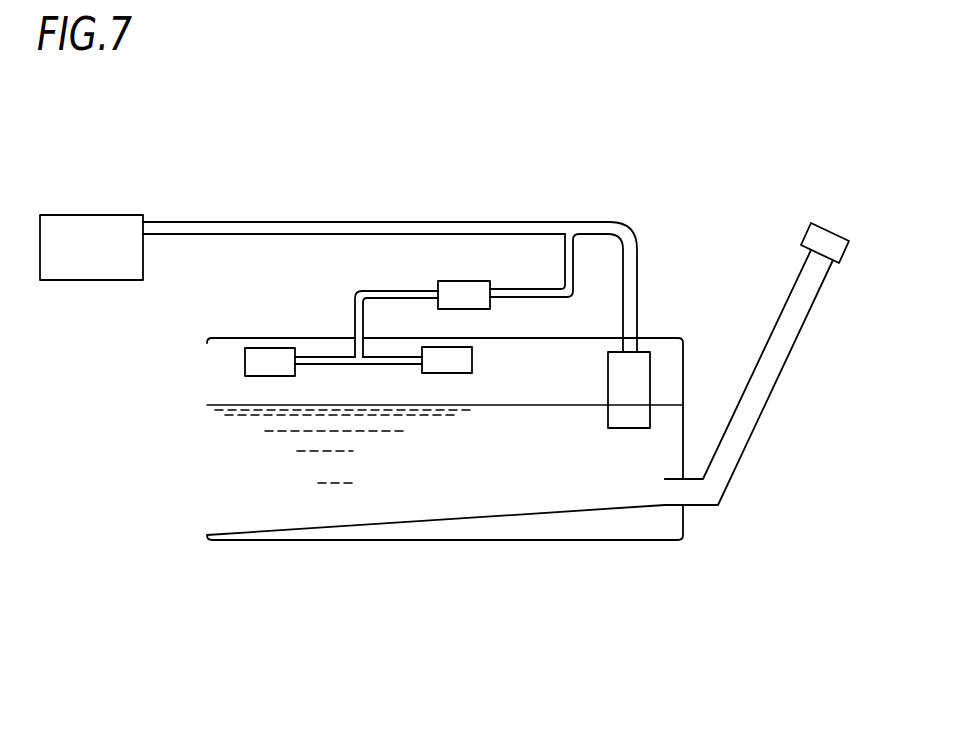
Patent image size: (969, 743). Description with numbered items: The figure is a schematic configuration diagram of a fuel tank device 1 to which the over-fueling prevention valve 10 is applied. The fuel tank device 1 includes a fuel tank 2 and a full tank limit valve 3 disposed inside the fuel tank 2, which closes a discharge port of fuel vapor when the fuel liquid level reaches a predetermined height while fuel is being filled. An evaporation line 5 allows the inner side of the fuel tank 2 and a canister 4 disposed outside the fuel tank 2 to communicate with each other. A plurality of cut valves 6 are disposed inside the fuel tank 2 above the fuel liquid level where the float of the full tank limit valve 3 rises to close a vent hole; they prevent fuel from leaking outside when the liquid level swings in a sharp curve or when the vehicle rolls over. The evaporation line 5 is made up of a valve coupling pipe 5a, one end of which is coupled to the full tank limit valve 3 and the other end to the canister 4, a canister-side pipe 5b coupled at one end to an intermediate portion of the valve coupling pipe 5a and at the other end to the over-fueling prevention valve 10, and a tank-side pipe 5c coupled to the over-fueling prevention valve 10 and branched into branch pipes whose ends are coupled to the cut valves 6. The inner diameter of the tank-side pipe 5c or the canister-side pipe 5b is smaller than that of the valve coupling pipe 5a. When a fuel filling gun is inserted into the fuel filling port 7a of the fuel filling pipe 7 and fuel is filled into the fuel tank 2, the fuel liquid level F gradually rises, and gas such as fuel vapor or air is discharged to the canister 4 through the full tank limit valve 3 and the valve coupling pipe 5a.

The fuel tank device 1 is at (273, 200).
The fuel tank 2 is at (492, 541).
The full tank limit valve 3 is at (650, 370).
The canister 4 is at (89, 281).
The evaporation line 5 is at (603, 160).
The valve coupling pipe 5a is at (586, 222).
The canister-side pipe 5b is at (512, 288).
The tank-side pipe 5c is at (385, 290).
The cut valves 6 is at (269, 347).
The fuel filling pipe 7 is at (772, 390).
The fuel filling port 7a is at (836, 241).
The over-fueling prevention valve 10 is at (454, 272).
The fuel liquid level F is at (557, 405).